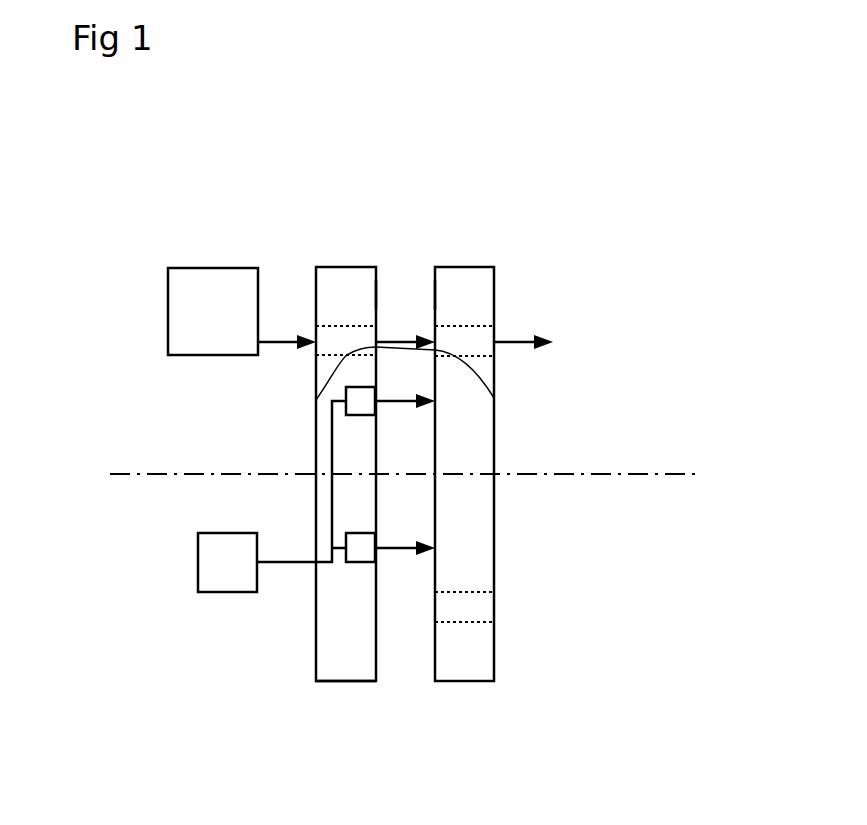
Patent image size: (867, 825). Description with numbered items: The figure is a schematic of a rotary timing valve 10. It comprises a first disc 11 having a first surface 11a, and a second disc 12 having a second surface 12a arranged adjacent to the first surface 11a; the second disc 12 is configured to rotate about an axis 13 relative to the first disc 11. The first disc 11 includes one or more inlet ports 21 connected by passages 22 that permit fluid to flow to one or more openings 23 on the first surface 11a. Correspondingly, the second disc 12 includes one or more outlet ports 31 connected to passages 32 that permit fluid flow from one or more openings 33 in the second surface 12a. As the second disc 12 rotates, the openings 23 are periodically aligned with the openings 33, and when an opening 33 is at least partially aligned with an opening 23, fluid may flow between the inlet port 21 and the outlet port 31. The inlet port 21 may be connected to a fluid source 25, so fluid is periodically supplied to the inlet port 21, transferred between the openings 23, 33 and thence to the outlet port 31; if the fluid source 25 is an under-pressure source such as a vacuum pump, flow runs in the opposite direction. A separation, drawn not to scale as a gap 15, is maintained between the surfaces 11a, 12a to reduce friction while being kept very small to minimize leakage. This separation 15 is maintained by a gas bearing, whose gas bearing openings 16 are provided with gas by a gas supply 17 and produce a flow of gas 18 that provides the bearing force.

The rotary timing valve 10 is at (612, 190).
The first disc 11 is at (347, 267).
The first surface 11a is at (376, 295).
The second disc 12 is at (465, 267).
The second surface 12a is at (435, 295).
The axis 13 is at (667, 474).
The gap 15 is at (406, 681).
The gas bearing openings 16 is at (363, 563).
The gas supply 17 is at (198, 563).
The flow of gas 18 is at (407, 555).
The inlet port 21 is at (316, 350).
The passages 22 is at (347, 326).
The openings 23 is at (316, 400).
The fluid source 25 is at (168, 297).
The outlet port 31 is at (494, 350).
The passages 32 is at (465, 326).
The openings 33 is at (494, 398).